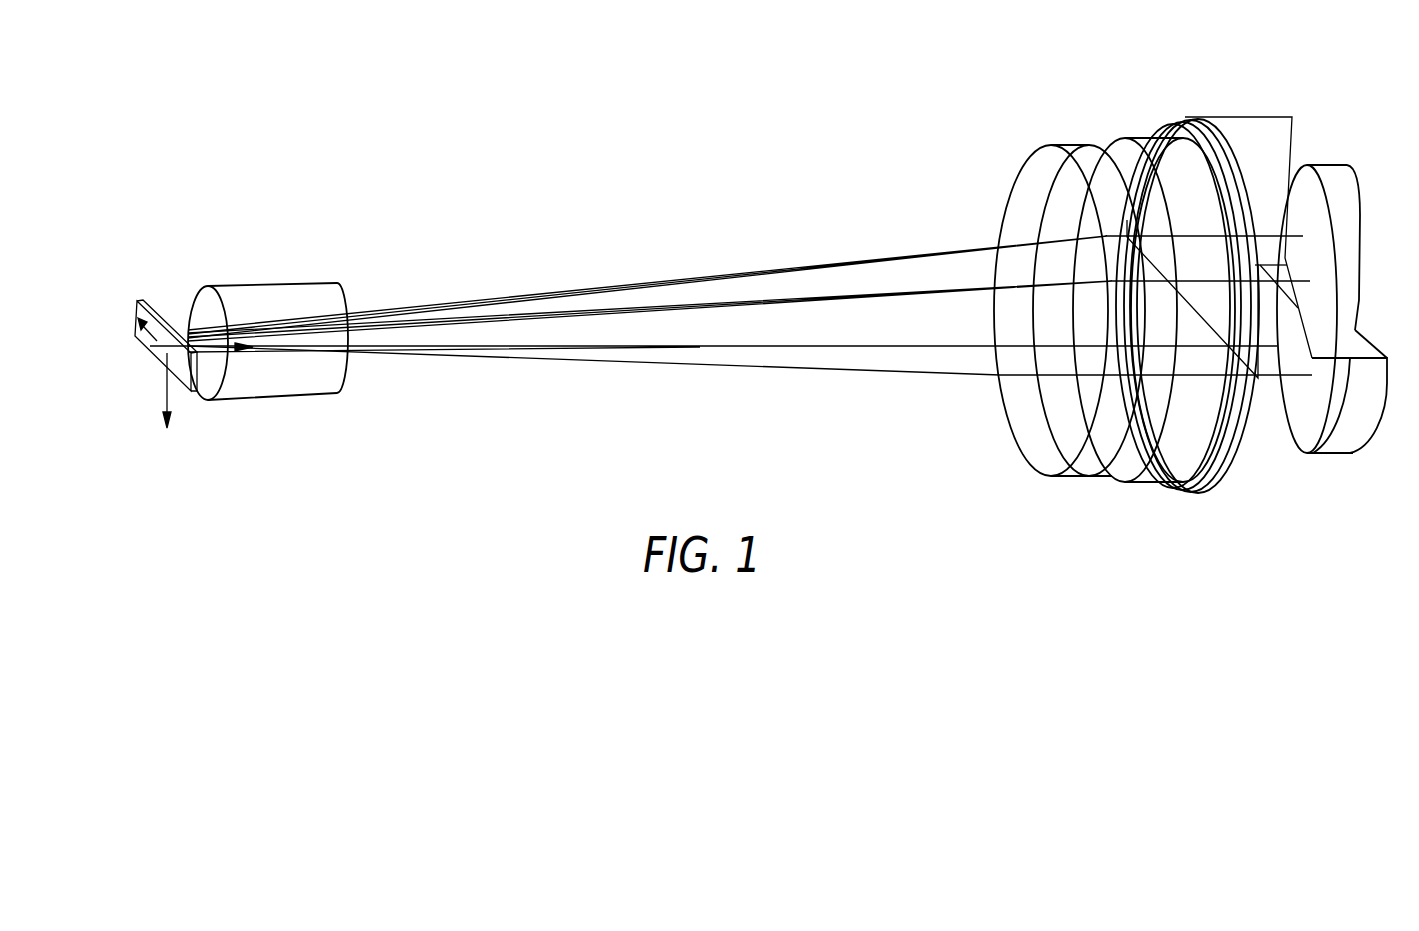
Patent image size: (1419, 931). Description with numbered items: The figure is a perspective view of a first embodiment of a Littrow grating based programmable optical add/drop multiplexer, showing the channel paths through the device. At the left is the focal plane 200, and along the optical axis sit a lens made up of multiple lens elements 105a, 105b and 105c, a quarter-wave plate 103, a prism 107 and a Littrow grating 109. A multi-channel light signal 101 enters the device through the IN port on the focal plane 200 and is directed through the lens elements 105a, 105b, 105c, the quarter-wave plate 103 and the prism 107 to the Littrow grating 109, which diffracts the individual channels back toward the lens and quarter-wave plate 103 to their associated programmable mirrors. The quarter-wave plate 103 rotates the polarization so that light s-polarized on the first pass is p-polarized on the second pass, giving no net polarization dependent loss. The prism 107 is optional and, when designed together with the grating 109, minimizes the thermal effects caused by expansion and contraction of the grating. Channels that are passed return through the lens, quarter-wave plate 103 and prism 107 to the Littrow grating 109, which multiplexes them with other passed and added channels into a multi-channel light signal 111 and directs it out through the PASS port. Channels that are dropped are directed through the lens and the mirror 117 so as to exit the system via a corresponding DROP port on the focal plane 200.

The multi-channel light signal 101 is at (810, 293).
The quarter-wave plate 103 is at (1207, 492).
The lens element 105a is at (287, 283).
The lens element 105b is at (1062, 143).
The lens element 105c is at (1140, 136).
The prism 107 is at (1250, 117).
The Littrow grating 109 is at (1360, 250).
The multi-channel light signal 111 is at (887, 260).
The mirror 117 is at (1385, 403).
The focal plane 200 is at (137, 352).